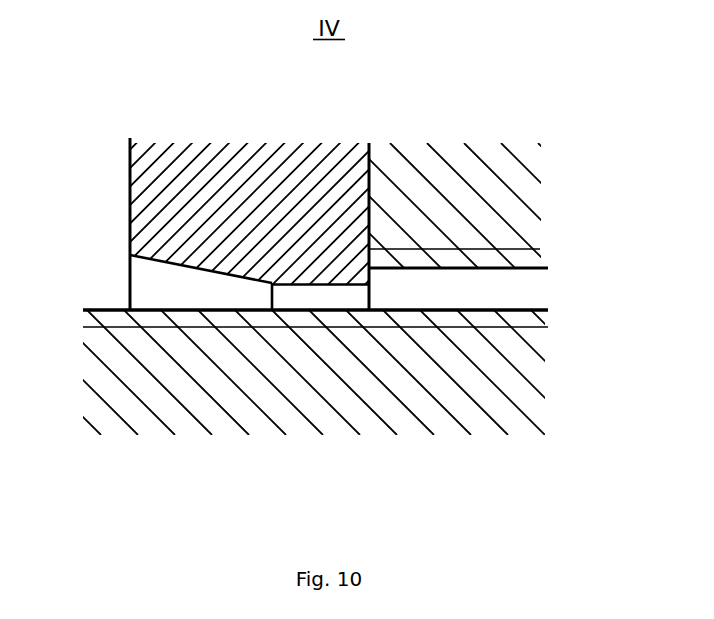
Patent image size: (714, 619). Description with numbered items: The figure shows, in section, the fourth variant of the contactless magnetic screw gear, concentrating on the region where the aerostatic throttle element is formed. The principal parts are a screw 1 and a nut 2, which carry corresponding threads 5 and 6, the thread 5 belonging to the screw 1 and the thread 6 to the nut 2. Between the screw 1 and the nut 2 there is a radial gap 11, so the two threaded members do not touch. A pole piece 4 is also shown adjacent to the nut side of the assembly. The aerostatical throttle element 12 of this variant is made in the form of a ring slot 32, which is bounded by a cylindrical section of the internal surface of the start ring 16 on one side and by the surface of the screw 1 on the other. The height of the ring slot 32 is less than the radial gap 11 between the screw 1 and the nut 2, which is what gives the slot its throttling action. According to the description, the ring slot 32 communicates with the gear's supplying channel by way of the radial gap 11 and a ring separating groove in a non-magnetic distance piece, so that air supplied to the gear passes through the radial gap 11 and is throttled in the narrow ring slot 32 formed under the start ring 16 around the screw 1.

The screw 1 is at (200, 368).
The nut 2 is at (125, 208).
The pole piece 4 is at (387, 192).
The thread of the screw 5 is at (438, 318).
The thread of the nut 6 is at (465, 199).
The radial gap 11 is at (428, 287).
The aerostatical throttle element 12 is at (319, 285).
The start ring 16 is at (153, 190).
The ring slot 32 is at (317, 295).